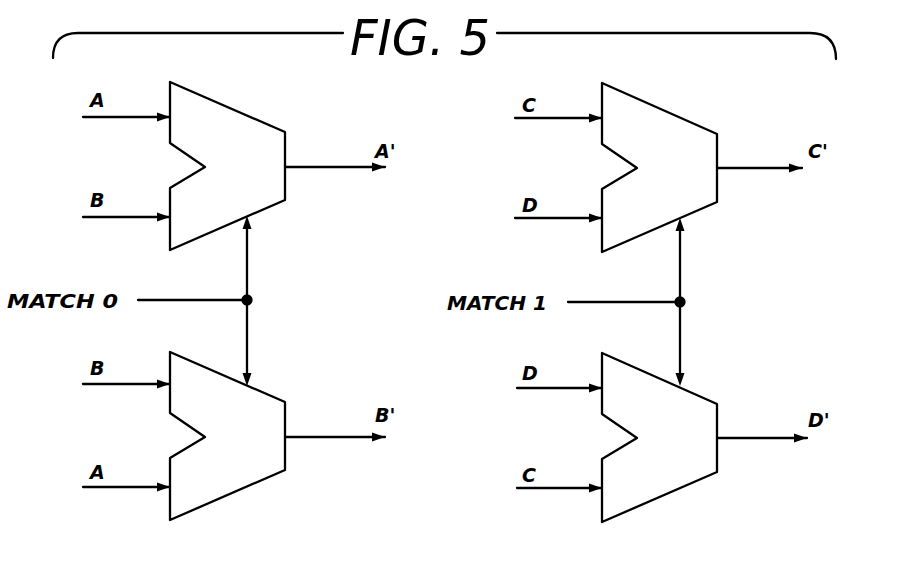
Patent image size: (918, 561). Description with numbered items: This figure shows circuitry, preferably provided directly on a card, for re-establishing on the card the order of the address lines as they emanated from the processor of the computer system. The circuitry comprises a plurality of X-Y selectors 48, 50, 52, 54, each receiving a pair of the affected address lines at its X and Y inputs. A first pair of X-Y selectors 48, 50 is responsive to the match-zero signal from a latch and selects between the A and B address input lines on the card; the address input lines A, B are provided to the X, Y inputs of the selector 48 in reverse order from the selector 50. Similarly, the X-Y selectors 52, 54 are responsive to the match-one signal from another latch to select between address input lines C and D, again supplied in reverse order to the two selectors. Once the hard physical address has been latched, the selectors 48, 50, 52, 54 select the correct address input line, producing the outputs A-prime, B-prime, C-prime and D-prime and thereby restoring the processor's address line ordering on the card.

The X-Y selector 48 is at (288, 107).
The X-Y selector 50 is at (267, 392).
The X-Y selector 52 is at (687, 120).
The X-Y selector 54 is at (717, 404).